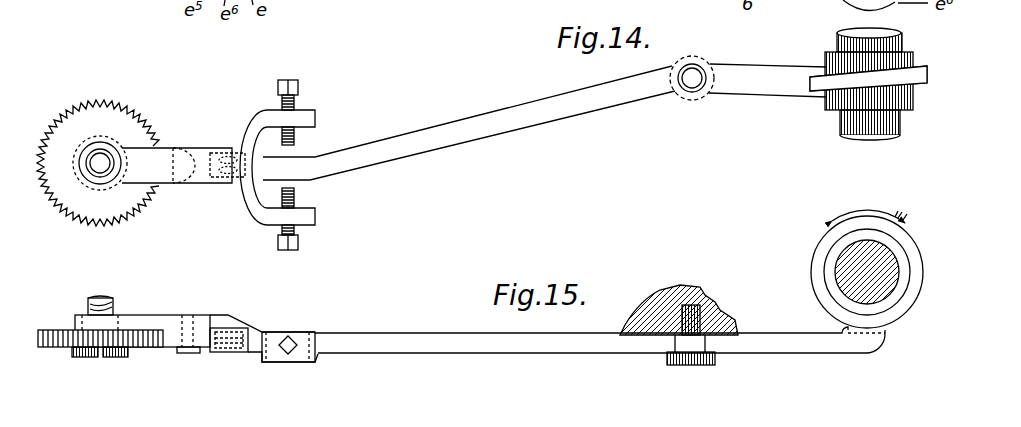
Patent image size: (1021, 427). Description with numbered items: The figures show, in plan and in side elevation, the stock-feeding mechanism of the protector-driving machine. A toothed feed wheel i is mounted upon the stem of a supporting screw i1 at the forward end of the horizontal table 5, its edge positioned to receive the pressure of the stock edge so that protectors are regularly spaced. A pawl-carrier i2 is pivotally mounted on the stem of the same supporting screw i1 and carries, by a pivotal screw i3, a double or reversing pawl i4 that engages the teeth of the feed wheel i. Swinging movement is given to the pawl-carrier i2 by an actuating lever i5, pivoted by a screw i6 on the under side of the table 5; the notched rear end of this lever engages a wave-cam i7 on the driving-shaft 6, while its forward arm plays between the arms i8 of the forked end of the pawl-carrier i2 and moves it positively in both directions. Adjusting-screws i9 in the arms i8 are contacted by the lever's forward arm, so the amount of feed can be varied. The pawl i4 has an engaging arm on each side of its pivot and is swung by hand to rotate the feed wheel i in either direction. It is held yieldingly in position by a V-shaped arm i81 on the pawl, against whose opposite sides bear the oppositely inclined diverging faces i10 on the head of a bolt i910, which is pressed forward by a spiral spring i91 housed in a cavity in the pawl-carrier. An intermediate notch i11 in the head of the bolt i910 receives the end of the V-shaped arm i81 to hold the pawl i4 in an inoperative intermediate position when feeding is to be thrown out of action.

In FIG. 14, the feed wheel i is at (77, 220).
In FIG. 15, the feed wheel i is at (50, 350).
In FIG. 14, the supporting screw i1 is at (77, 163).
In FIG. 15, the supporting screw i1 is at (119, 359).
In FIG. 14, the pawl-carrier i2 is at (200, 184).
In FIG. 15, the pawl-carrier i2 is at (152, 320).
In FIG. 14, the pivotal screw i3 is at (165, 146).
In FIG. 15, the pivotal screw i3 is at (195, 349).
In FIG. 14, the double or reversing pawl i4 is at (181, 138).
In FIG. 15, the double or reversing pawl i4 is at (171, 345).
In FIG. 14, the actuating lever i5 is at (592, 111).
In FIG. 15, the actuating lever i5 is at (568, 349).
In FIG. 15, the screw i6 is at (710, 368).
In FIG. 14, the wave-cam i7 is at (925, 86).
In FIG. 15, the wave-cam i7 is at (920, 203).
In FIG. 14, the arms of forked end of pawl-carrier i8 is at (318, 116).
In FIG. 14, the V-shaped arm i81 is at (200, 172).
In FIG. 14, the adjusting-screws i9 is at (290, 82).
In FIG. 14, the spiral spring i91 is at (240, 176).
In FIG. 14, the bolt i910 is at (246, 158).
In FIG. 14, the oppositely inclined diverging faces i10 is at (210, 155).
In FIG. 14, the intermediate notch i11 is at (208, 156).
In FIG. 15, the horizontal table 5 is at (723, 300).
In FIG. 14, the driving-shaft 6 is at (835, 131).
In FIG. 15, the driving-shaft 6 is at (835, 270).